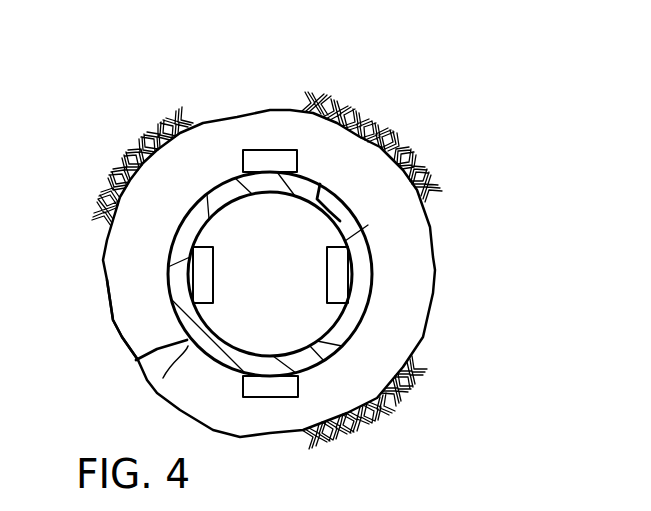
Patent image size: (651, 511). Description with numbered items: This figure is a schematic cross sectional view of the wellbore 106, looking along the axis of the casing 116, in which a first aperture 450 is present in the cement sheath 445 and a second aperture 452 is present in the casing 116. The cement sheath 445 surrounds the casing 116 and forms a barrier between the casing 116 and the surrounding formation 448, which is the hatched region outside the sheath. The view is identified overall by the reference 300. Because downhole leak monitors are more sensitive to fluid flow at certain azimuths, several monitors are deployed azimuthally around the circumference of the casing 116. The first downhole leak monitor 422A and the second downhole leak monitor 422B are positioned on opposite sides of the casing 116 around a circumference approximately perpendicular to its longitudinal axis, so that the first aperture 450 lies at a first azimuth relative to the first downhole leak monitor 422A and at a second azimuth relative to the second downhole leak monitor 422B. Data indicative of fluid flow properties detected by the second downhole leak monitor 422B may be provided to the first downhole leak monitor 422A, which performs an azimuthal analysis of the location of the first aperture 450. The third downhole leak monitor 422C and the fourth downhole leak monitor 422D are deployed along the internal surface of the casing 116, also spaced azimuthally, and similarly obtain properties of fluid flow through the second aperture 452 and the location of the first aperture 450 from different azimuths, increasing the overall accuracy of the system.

The pipe monitoring system 300 is at (350, 48).
The wellbore 106 is at (182, 133).
The casing 116 is at (360, 244).
The first downhole leak monitor 422A is at (273, 162).
The second downhole leak monitor 422B is at (272, 388).
The third downhole leak monitor 422C is at (215, 272).
The fourth downhole leak monitor 422D is at (325, 290).
The cement sheath 445 is at (123, 322).
The formation 448 is at (471, 369).
The first aperture 450 is at (147, 363).
The second aperture 452 is at (323, 210).